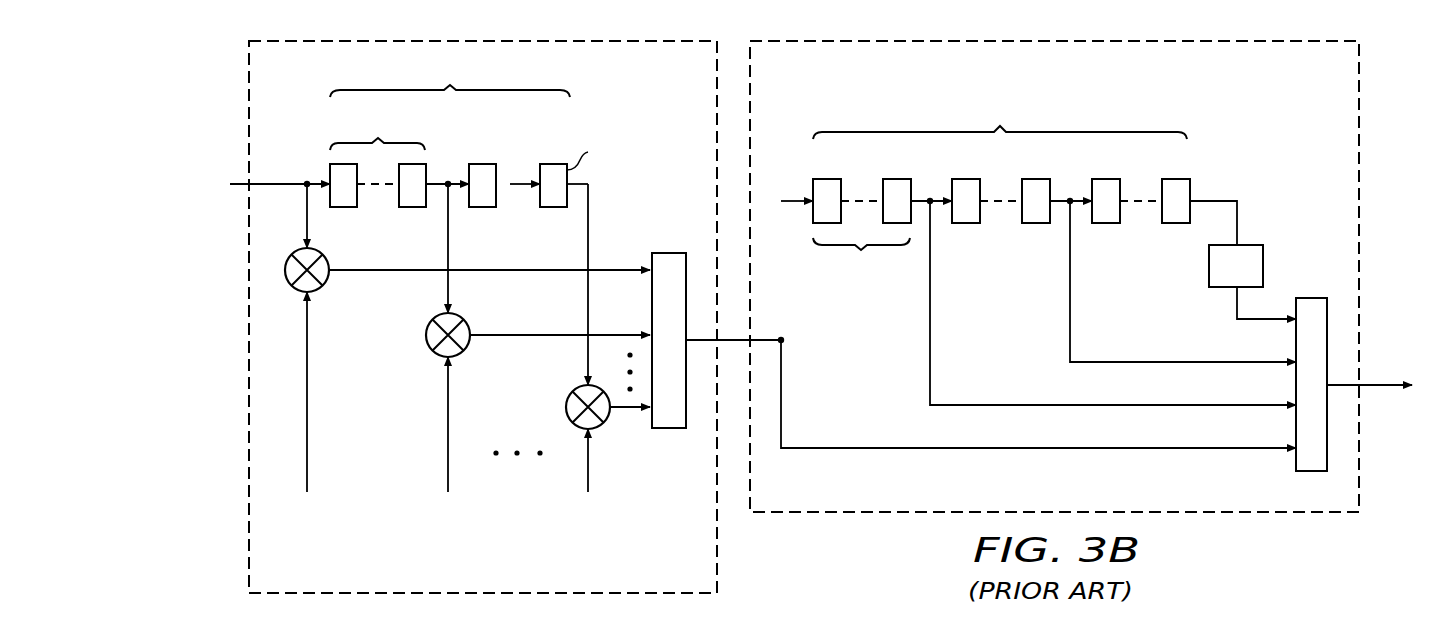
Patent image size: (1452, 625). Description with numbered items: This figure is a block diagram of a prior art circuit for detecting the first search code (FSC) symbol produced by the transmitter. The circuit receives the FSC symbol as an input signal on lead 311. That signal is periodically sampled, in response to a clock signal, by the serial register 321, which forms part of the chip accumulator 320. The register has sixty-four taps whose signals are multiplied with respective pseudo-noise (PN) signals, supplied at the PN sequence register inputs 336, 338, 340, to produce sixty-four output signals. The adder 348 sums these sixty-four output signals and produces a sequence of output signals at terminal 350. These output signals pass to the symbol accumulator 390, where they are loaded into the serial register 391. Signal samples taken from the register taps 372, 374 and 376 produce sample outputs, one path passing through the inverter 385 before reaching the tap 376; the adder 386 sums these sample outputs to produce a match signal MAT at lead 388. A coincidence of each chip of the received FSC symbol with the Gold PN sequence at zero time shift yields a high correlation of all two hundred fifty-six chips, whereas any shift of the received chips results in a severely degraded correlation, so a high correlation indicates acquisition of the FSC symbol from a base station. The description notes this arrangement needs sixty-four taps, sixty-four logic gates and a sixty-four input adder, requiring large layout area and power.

The input lead 311 is at (287, 183).
The 16 chip accumulator matched filter (MF) 320 is at (249, 325).
The serial register 321 is at (597, 118).
The PN sequence register input (first multiplier) 336 is at (307, 388).
The PN sequence register input (second multiplier) 338 is at (448, 425).
The PN sequence register input (last multiplier) 340 is at (588, 475).
The adder 348 is at (664, 253).
The terminal 350 is at (781, 395).
The register tap 372 is at (930, 302).
The register tap 374 is at (1070, 288).
The register tap 376 is at (1237, 303).
The inverter INV 385 is at (1209, 263).
The adder 386 is at (1310, 298).
The output lead 388 is at (1382, 386).
The 4 symbol accumulator 390 is at (1270, 514).
The serial register 391 is at (1128, 118).